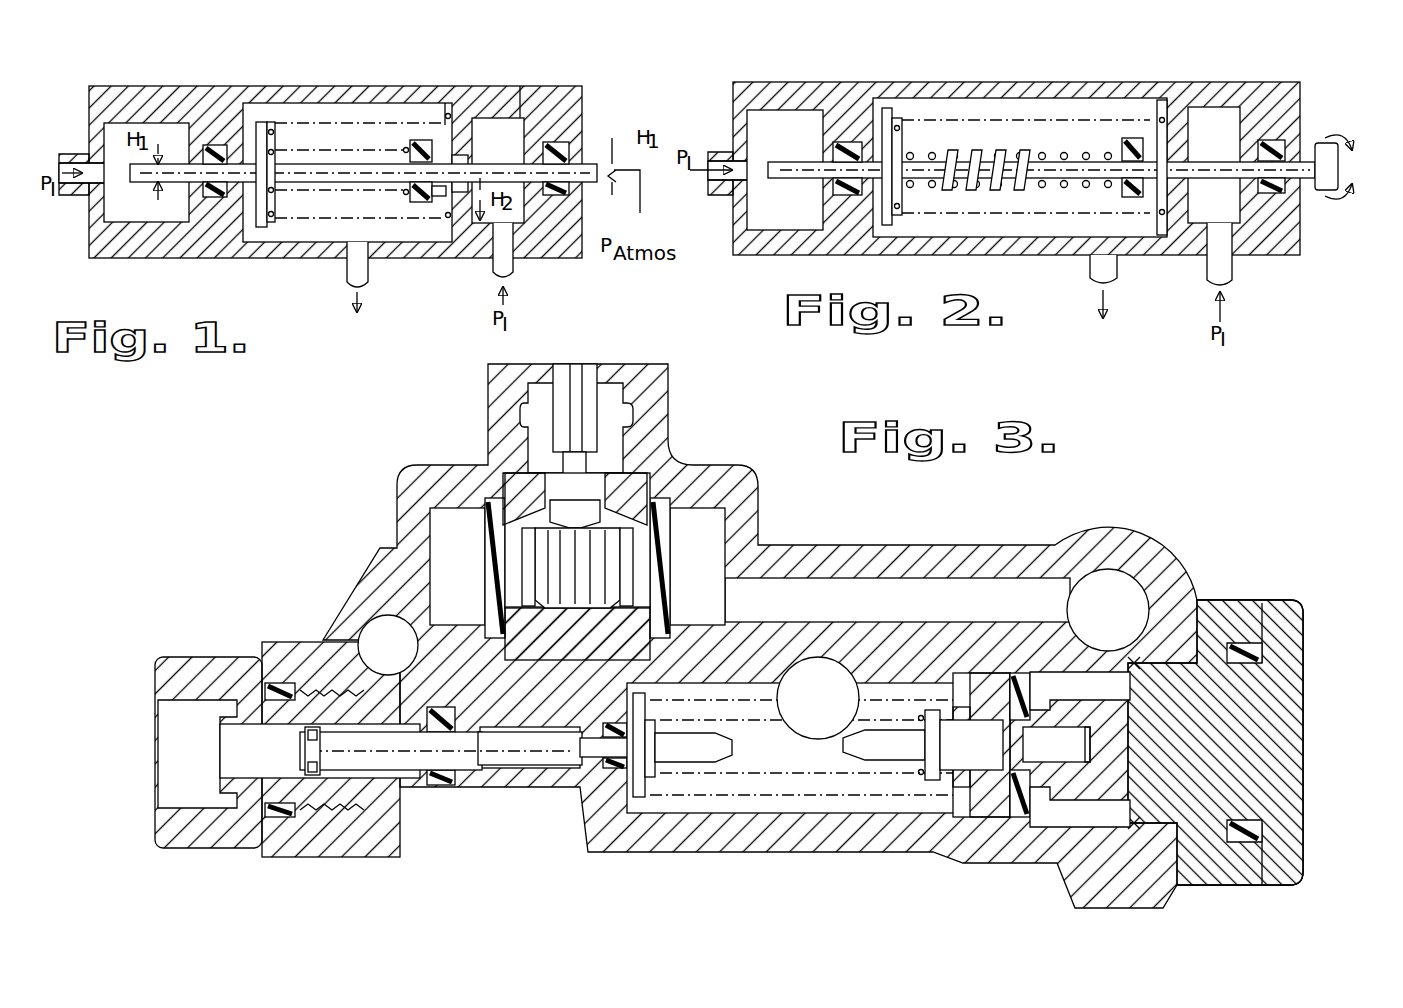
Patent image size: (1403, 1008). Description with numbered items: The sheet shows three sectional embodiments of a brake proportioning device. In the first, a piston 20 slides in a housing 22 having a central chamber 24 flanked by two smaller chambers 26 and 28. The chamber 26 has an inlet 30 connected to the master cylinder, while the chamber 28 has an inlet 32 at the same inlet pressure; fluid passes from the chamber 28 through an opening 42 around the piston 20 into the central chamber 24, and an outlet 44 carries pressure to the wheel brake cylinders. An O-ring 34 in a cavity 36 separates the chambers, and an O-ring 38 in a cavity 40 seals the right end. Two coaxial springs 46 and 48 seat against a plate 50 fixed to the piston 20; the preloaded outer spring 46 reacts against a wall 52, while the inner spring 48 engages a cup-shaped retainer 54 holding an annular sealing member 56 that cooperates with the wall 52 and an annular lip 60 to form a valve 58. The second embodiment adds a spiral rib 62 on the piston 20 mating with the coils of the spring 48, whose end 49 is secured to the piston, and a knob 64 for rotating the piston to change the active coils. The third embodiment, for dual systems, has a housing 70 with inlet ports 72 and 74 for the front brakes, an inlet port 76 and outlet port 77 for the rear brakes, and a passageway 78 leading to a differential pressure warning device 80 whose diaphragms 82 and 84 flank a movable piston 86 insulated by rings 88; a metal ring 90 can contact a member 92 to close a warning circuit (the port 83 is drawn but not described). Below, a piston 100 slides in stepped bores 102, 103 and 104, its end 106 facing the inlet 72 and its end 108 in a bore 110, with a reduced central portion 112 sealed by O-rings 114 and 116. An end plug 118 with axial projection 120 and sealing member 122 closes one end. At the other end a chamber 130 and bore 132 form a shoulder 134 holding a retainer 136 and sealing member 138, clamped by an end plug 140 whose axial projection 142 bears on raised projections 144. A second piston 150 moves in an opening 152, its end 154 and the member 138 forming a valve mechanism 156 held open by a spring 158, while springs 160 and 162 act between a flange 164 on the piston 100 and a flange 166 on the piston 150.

In FIG. 1, the piston 20 is at (340, 164).
In FIG. 2, the piston 20 is at (915, 162).
In FIG. 1, the housing 22 is at (222, 86).
In FIG. 2, the housing 22 is at (895, 82).
In FIG. 1, the central chamber 24 is at (318, 103).
In FIG. 2, the central chamber 24 is at (1020, 167).
In FIG. 1, the chamber 26 is at (132, 123).
In FIG. 2, the chamber 26 is at (785, 170).
In FIG. 1, the chamber 28 is at (512, 118).
In FIG. 2, the chamber 28 is at (1214, 165).
In FIG. 1, the inlet 30 is at (72, 157).
In FIG. 2, the inlet 30 is at (722, 182).
In FIG. 1, the inlet 32 is at (508, 266).
In FIG. 2, the inlet 32 is at (1236, 268).
In FIG. 1, the O-ring 34 is at (220, 197).
In FIG. 2, the O-ring 34 is at (847, 186).
In FIG. 1, the cavity 36 is at (208, 198).
In FIG. 2, the cavity 36 is at (847, 152).
In FIG. 1, the O-ring 38 is at (566, 148).
In FIG. 2, the O-ring 38 is at (1271, 185).
In FIG. 1, the cavity 40 is at (556, 142).
In FIG. 2, the cavity 40 is at (1271, 150).
In FIG. 1, the opening 42 is at (498, 170).
In FIG. 2, the opening 42 is at (1212, 200).
In FIG. 1, the outlet 44 is at (366, 284).
In FIG. 2, the outlet 44 is at (1118, 272).
In FIG. 1, the outer spring 46 is at (280, 128).
In FIG. 2, the outer spring 46 is at (900, 212).
In FIG. 1, the inner spring 48 is at (280, 152).
In FIG. 2, the inner spring 48 is at (1048, 190).
In FIG. 2, the end of spring 49 is at (958, 190).
In FIG. 1, the plate 50 is at (262, 227).
In FIG. 2, the plate 50 is at (888, 225).
In FIG. 1, the wall 52 is at (450, 103).
In FIG. 2, the wall 52 is at (1160, 222).
In FIG. 1, the cup-shaped retainer 54 is at (422, 140).
In FIG. 2, the cup-shaped retainer 54 is at (1132, 138).
In FIG. 1, the annular sealing member 56 is at (410, 194).
In FIG. 2, the annular sealing member 56 is at (1122, 148).
In FIG. 1, the valve 58 is at (436, 196).
In FIG. 1, the annular lip 60 is at (448, 218).
In FIG. 2, the annular lip 60 is at (1160, 118).
In FIG. 2, the spiral rib 62 is at (1010, 188).
In FIG. 2, the knob 64 is at (1322, 143).
In FIG. 3, the housing 70 is at (905, 545).
In FIG. 3, the inlet port 72 is at (197, 754).
In FIG. 3, the inlet port 74 is at (388, 645).
In FIG. 3, the inlet port 76 is at (1108, 610).
In FIG. 3, the outlet port 77 is at (818, 698).
In FIG. 3, the passageway 78 is at (897, 600).
In FIG. 3, the differential pressure switch and warning device 80 is at (470, 560).
In FIG. 3, the diaphragm 82 is at (485, 520).
In FIG. 3, the outlet port 83 is at (697, 566).
In FIG. 3, the diaphragm 84 is at (655, 500).
In FIG. 3, the movable piston 86 is at (598, 528).
In FIG. 3, the insulating rings 88 is at (515, 478).
In FIG. 3, the metal ring 90 is at (565, 612).
In FIG. 3, the member 92 is at (620, 460).
In FIG. 3, the piston 100 is at (441, 751).
In FIG. 3, the bore 102 is at (345, 770).
In FIG. 3, the bore 103 is at (572, 727).
In FIG. 3, the bore 104 is at (505, 728).
In FIG. 3, the end of piston 106 is at (305, 748).
In FIG. 3, the end of piston 108 is at (733, 747).
In FIG. 3, the bore 110 is at (730, 813).
In FIG. 3, the central portion of piston 112 is at (528, 787).
In FIG. 3, the O-ring 114 is at (440, 786).
In FIG. 3, the O-ring 116 is at (585, 800).
In FIG. 3, the end plug 118 is at (195, 840).
In FIG. 3, the axial projection 120 is at (485, 665).
In FIG. 3, the sealing member 122 is at (275, 817).
In FIG. 3, the chamber 130 is at (1080, 689).
In FIG. 3, the bore 132 is at (1035, 680).
In FIG. 3, the shoulder 134 is at (975, 817).
In FIG. 3, the retainer 136 is at (995, 817).
In FIG. 3, the sealing member 138 is at (1022, 817).
In FIG. 3, the end plug 140 is at (1280, 702).
In FIG. 3, the axial projection 142 is at (1075, 788).
In FIG. 3, the raised projections 144 is at (1090, 716).
In FIG. 3, the second piston 150 is at (884, 745).
In FIG. 3, the opening 152 is at (971, 745).
In FIG. 3, the end of piston 154 is at (1007, 705).
In FIG. 3, the valve mechanism 156 is at (1056, 744).
In FIG. 3, the spring 158 is at (1092, 745).
In FIG. 3, the spring 160 is at (645, 695).
In FIG. 3, the spring 162 is at (650, 714).
In FIG. 3, the flange 164 is at (648, 790).
In FIG. 3, the plate or flange 166 is at (930, 780).